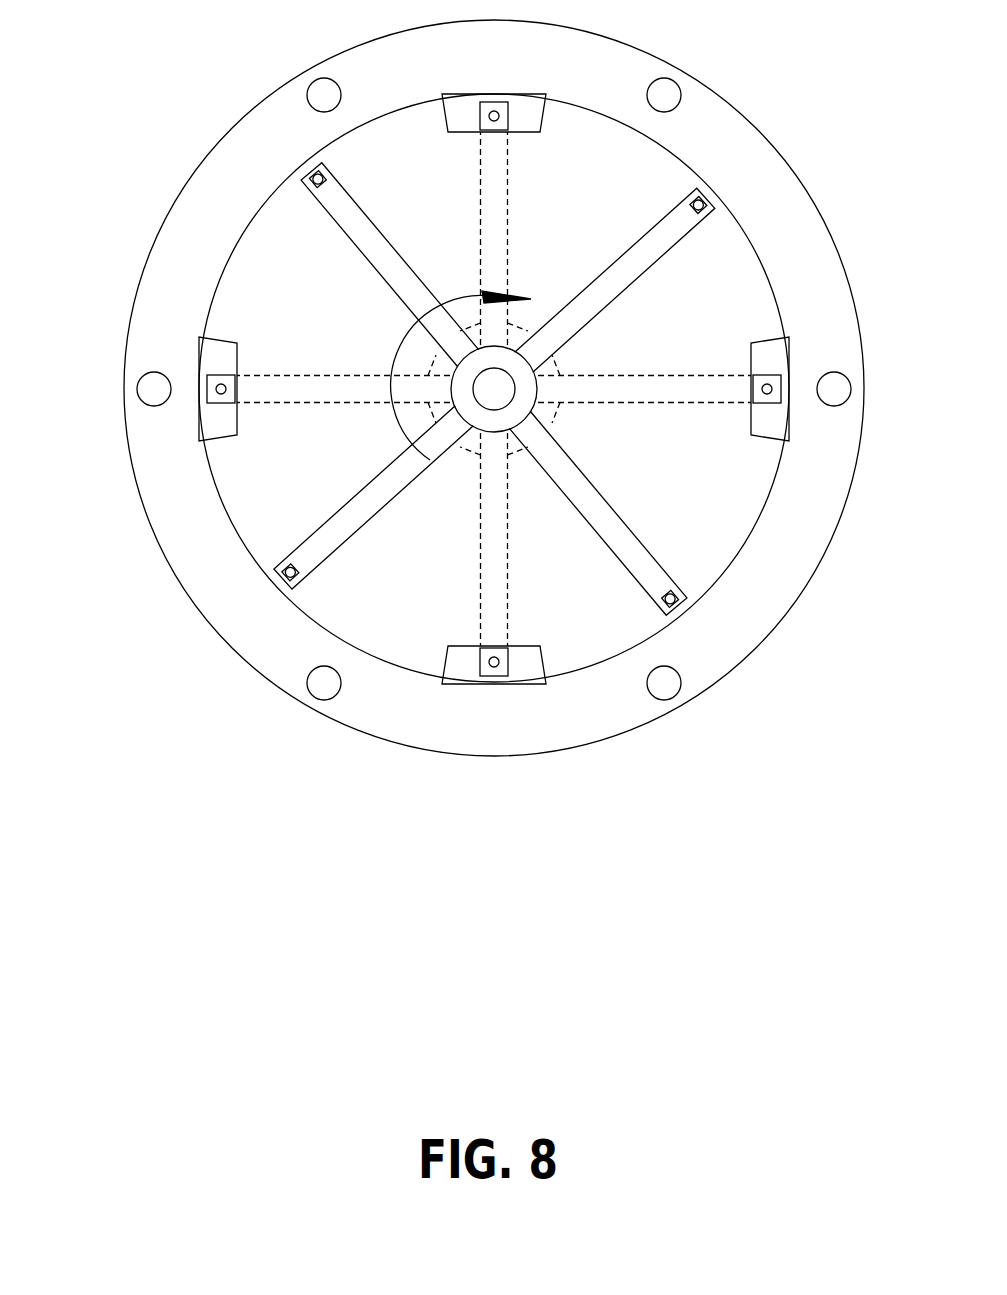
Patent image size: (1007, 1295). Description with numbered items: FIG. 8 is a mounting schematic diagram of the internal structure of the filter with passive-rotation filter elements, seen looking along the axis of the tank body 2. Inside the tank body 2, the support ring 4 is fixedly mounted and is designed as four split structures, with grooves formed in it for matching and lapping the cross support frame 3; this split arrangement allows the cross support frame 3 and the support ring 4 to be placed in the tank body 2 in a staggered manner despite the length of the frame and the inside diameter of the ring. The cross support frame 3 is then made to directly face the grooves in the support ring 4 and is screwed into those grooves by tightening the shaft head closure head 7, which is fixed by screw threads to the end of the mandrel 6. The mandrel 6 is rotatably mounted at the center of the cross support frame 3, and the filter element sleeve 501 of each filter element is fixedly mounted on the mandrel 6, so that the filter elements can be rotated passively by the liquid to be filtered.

The tank body 2 is at (494, 380).
The cross support frame 3 is at (570, 369).
The support ring 4 is at (556, 389).
The mandrel 6 is at (405, 389).
The shaft head closure head 7 is at (303, 333).
The filter element sleeve 501 is at (291, 437).